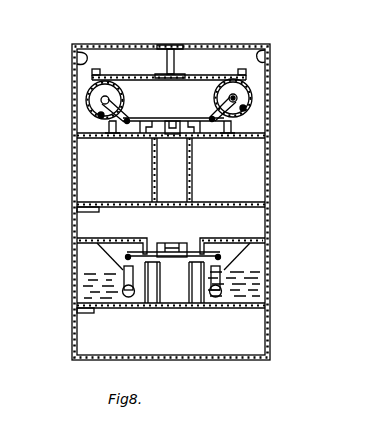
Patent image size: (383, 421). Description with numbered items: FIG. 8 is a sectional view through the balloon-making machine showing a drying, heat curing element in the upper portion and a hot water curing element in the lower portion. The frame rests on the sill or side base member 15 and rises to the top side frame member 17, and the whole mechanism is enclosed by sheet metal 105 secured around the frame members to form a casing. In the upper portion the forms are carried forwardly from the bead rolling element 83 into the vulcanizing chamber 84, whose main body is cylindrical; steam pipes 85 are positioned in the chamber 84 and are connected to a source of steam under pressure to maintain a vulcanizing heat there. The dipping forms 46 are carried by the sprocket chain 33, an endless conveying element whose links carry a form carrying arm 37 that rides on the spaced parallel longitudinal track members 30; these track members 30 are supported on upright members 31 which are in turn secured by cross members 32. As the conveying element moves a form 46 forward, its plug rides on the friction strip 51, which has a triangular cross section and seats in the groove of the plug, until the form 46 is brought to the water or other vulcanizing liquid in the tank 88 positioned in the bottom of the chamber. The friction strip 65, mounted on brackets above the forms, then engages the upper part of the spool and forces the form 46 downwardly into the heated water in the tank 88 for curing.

The sill or side base member 15 is at (75, 350).
The top side frame member 17 is at (77, 62).
The sheet metal 105 is at (180, 44).
The vulcanizing chamber 84 is at (86, 104).
The steam pipes 85 is at (98, 117).
The dipping form 46 is at (237, 96).
The friction strip 51 is at (108, 134).
The form carrying arm 37 is at (145, 117).
The sprocket chain 33 is at (186, 98).
The longitudinal track members 30 is at (144, 138).
The upright members 31 is at (152, 180).
The cross members 32 is at (240, 202).
The bead rolling element 83 is at (183, 236).
The friction strip 65 is at (118, 265).
The tank 88 is at (95, 282).